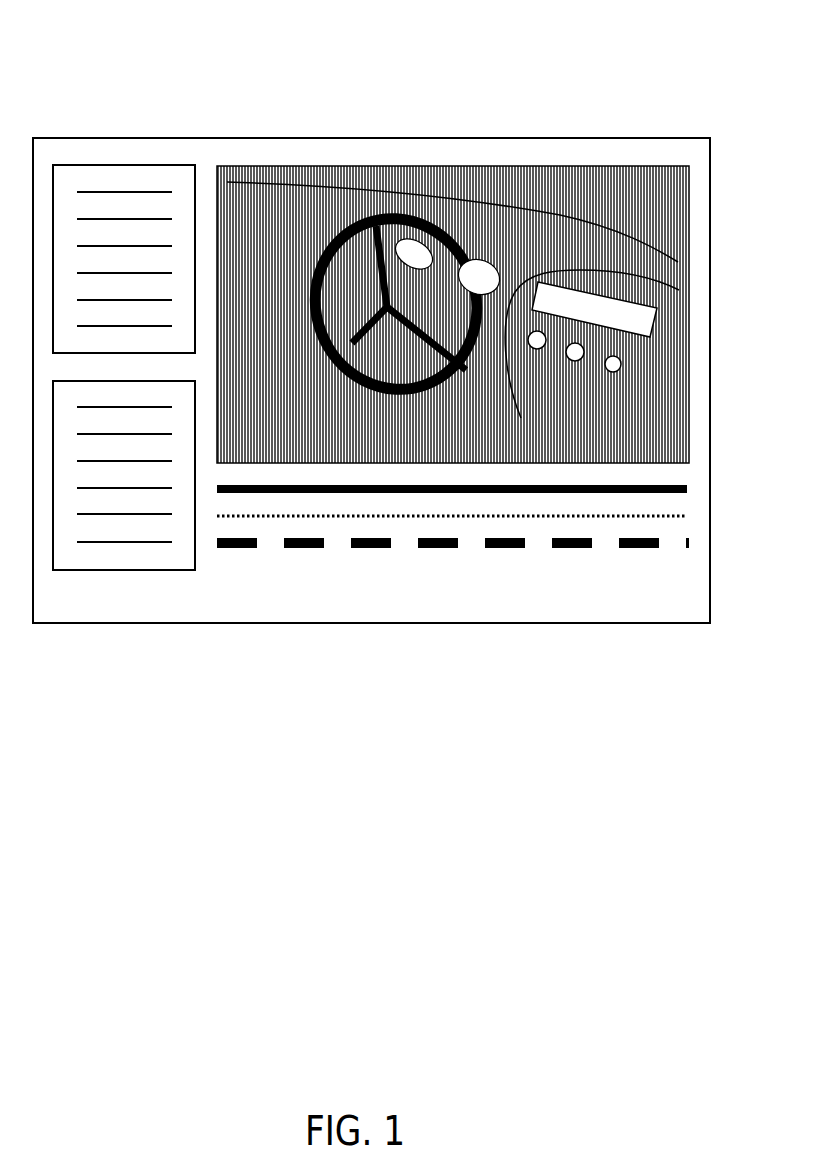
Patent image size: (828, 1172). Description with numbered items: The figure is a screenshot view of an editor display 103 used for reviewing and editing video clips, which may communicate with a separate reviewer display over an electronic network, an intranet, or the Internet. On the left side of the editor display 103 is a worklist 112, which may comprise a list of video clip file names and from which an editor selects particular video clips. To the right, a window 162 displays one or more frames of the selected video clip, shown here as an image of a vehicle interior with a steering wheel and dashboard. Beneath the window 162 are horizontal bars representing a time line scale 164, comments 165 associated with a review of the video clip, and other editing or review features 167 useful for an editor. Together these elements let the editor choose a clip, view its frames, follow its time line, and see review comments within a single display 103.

The editor display 103 is at (513, 137).
The worklist 112 is at (122, 502).
The window 162 is at (613, 166).
The time line scale 164 is at (535, 493).
The comments 165 is at (643, 518).
The editing or review features 167 is at (430, 548).